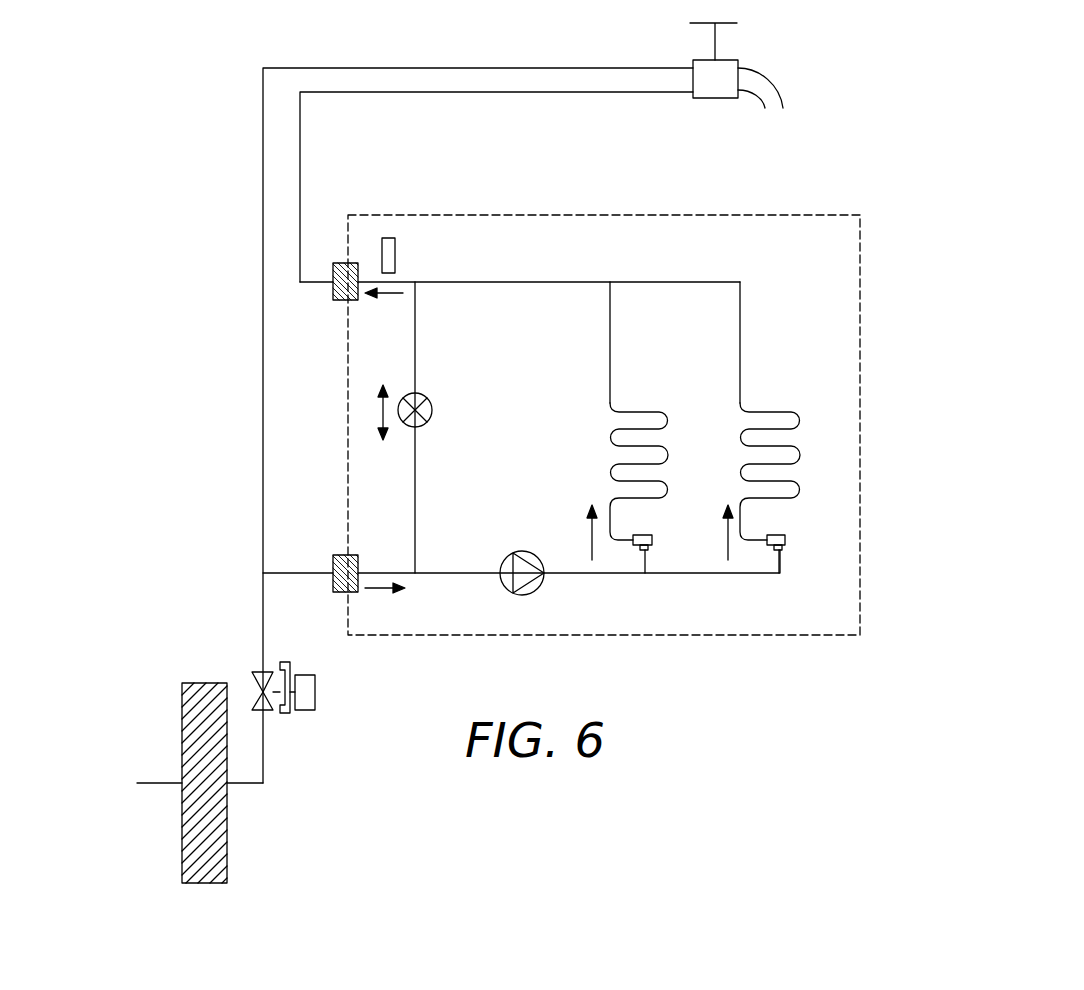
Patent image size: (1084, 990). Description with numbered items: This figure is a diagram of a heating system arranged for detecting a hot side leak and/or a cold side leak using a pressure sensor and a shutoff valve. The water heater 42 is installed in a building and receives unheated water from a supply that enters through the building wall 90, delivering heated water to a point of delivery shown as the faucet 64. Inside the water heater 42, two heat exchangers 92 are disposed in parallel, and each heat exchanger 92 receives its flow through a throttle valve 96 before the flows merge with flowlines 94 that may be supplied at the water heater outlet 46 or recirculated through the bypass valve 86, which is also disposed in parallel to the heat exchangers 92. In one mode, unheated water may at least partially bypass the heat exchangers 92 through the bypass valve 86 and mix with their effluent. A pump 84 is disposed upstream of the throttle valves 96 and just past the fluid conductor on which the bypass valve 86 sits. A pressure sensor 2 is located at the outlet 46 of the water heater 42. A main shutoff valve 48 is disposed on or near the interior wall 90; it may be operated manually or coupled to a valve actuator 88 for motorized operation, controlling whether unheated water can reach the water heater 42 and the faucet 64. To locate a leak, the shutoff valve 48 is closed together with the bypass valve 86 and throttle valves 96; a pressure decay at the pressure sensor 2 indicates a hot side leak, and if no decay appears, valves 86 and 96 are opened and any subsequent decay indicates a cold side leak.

The pressure sensor 2 is at (397, 258).
The water heater 42 is at (645, 636).
The water heater outlet 46 is at (310, 280).
The main shutoff valve 48 is at (250, 680).
The faucet 64 is at (756, 72).
The pump 84 is at (542, 580).
The bypass valve 86 is at (432, 412).
The valve actuator 88 is at (316, 690).
The building wall 90 is at (228, 832).
The heat exchanger 92 is at (608, 467).
The flowline 94 is at (608, 373).
The throttle valve 96 is at (652, 540).